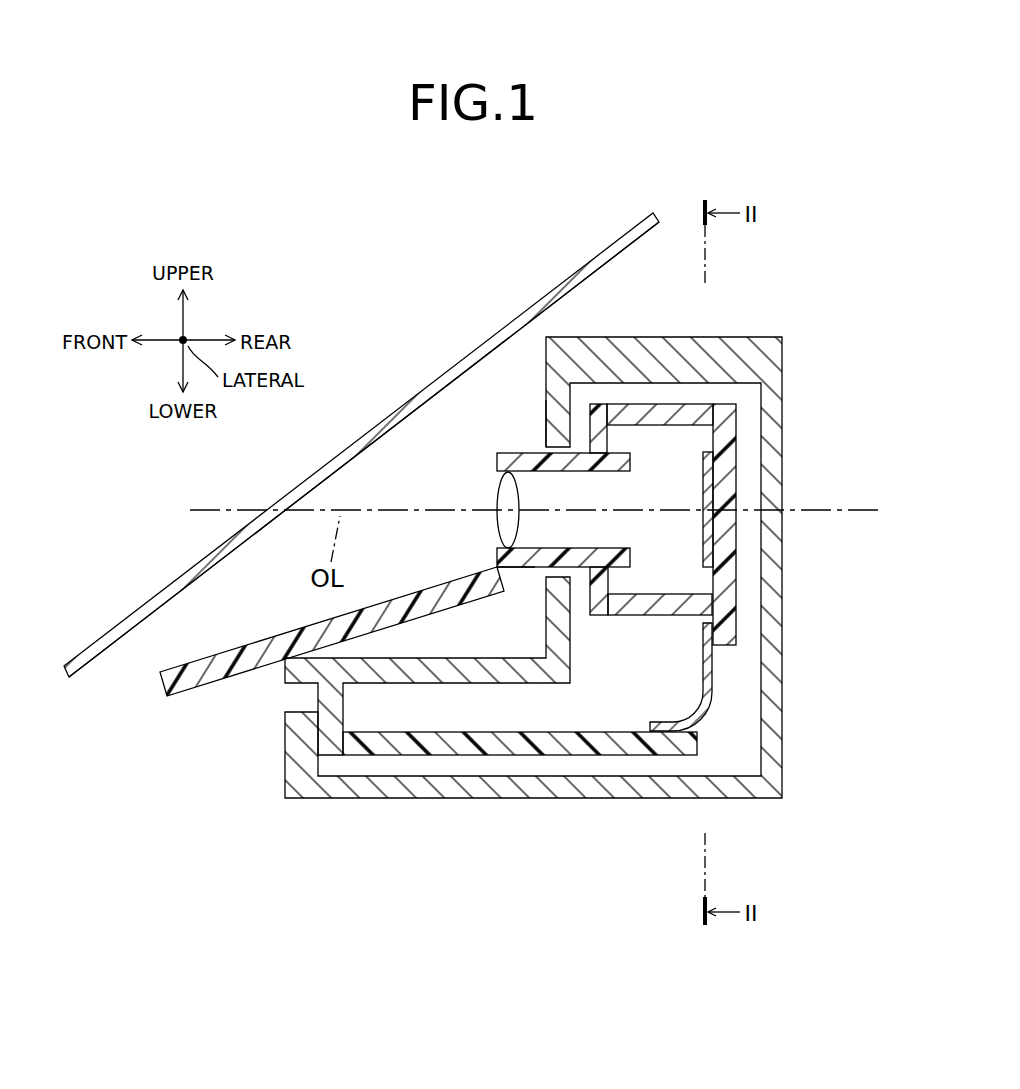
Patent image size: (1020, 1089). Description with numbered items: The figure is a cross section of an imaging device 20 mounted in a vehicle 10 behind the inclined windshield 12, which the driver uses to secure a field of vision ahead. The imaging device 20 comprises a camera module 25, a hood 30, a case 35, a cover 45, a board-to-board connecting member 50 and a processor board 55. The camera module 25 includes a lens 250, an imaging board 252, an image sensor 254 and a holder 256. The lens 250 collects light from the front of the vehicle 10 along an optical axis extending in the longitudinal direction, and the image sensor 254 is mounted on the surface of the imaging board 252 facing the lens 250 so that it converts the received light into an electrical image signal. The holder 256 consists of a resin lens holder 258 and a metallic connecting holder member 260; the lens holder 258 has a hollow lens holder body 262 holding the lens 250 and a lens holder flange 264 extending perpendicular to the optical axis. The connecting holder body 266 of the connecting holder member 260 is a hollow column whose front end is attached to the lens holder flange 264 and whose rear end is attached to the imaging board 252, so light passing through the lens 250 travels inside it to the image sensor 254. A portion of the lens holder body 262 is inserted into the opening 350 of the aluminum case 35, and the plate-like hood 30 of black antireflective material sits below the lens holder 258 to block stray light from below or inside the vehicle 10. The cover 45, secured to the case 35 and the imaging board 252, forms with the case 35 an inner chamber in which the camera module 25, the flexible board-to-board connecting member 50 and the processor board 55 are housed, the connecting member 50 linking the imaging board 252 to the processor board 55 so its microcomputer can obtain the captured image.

The vehicle 10 is at (637, 222).
The windshield 12 is at (542, 298).
The imaging device 20 is at (807, 295).
The camera module 25 is at (508, 452).
The hood 30 is at (255, 657).
The case 35 is at (718, 337).
The cover 45 is at (510, 797).
The board-to-board connecting member 50 is at (708, 692).
The processor board 55 is at (583, 745).
The lens 250 is at (497, 497).
The imaging board 252 is at (732, 440).
The image sensor 254 is at (707, 483).
The holder 256 is at (526, 572).
The lens holder 258 is at (497, 553).
The connecting holder member 260 is at (632, 407).
The lens holder body 262 is at (497, 462).
The lens holder flange 264 is at (596, 412).
The connecting holder body 266 is at (675, 413).
The opening 350 is at (552, 438).